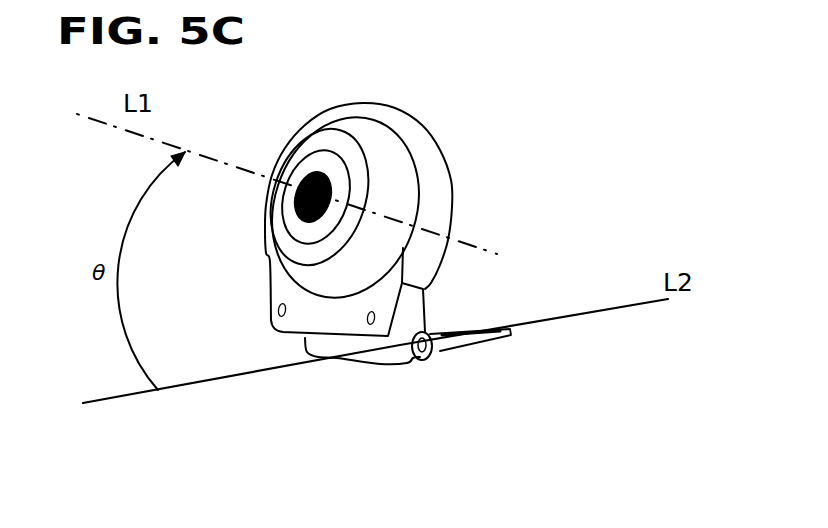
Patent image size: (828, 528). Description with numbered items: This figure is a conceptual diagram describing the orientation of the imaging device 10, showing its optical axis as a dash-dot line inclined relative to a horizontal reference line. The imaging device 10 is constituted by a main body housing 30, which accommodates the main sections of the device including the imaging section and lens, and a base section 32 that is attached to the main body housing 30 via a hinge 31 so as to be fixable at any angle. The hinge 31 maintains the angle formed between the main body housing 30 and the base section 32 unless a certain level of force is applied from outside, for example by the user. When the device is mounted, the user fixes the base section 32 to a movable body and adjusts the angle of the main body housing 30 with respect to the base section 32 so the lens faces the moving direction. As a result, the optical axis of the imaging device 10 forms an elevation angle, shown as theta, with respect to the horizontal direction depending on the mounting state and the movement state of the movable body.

The imaging device 10 is at (405, 245).
The main body housing 30 is at (446, 194).
The hinge 31 is at (363, 361).
The base section 32 is at (477, 343).